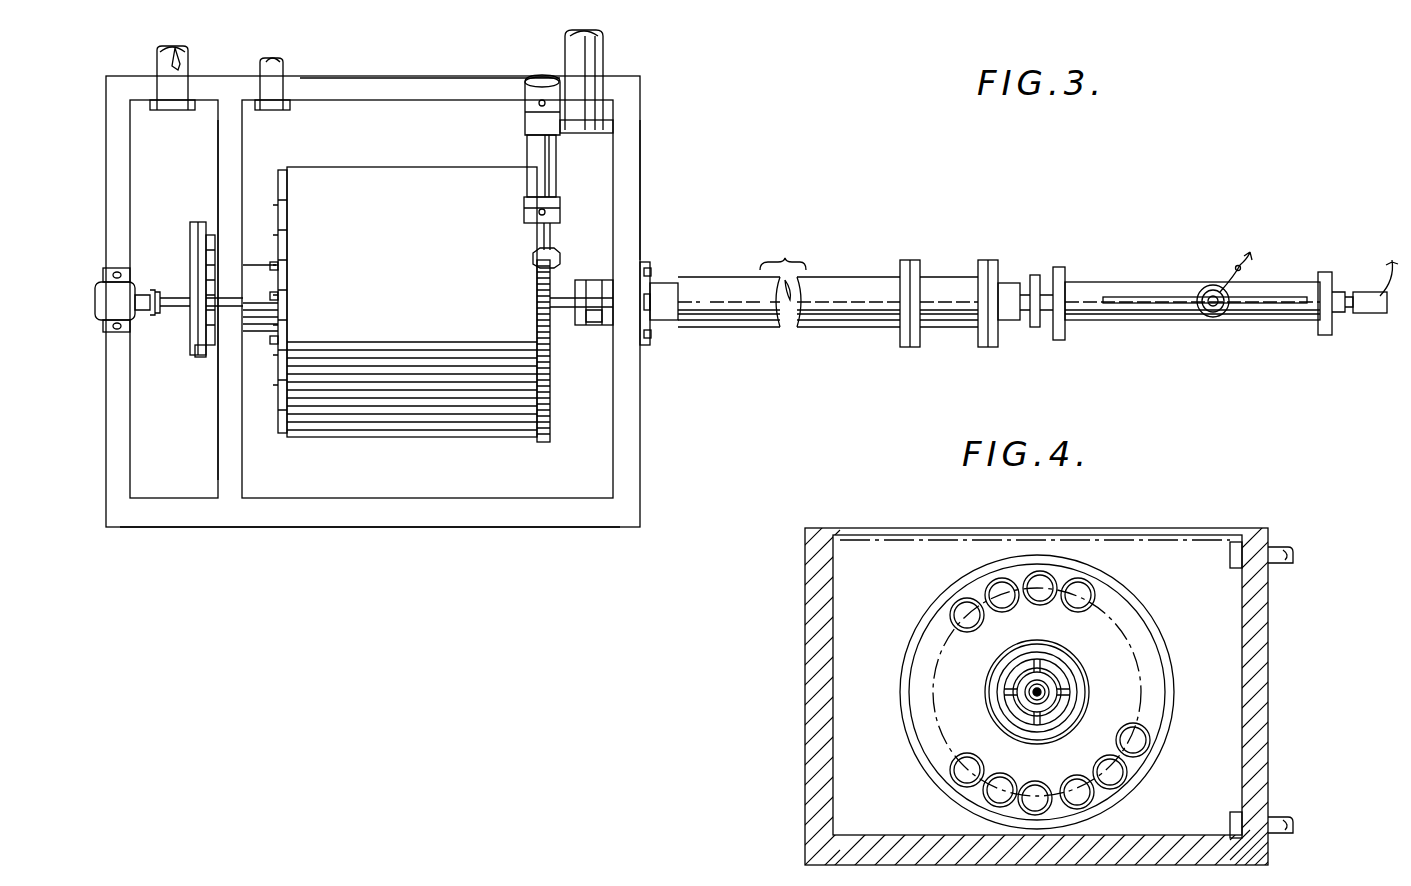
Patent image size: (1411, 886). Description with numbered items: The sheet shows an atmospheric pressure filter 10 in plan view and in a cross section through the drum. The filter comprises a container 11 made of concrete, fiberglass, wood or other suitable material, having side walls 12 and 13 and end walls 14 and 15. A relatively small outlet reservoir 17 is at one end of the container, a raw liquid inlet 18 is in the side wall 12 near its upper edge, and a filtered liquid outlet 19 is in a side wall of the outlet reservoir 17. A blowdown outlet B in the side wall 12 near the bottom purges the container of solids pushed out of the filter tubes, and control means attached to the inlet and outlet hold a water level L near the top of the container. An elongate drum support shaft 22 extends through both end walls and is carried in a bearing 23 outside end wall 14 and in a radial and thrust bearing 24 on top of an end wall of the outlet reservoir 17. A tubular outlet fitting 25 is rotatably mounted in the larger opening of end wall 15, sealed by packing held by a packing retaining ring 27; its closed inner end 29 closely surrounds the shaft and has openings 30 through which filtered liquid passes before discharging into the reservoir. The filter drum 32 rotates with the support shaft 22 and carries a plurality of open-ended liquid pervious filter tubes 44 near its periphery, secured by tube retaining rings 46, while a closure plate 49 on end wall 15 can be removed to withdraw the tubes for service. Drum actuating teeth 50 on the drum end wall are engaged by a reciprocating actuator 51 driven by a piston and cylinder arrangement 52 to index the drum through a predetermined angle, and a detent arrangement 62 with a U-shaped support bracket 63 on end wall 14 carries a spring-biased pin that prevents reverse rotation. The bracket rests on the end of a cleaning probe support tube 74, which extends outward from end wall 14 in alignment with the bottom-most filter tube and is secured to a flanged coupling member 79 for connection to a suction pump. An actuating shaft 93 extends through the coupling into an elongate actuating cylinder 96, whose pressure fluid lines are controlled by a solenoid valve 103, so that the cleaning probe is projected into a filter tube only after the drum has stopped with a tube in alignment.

In FIG. 3, the atmospheric pressure filter 10 is at (710, 135).
In FIG. 4, the atmospheric pressure filter 10 is at (1207, 510).
In FIG. 3, the container 11 is at (640, 418).
In FIG. 4, the container 11 is at (1270, 590).
In FIG. 3, the side wall 12 is at (415, 76).
In FIG. 3, the side wall 13 is at (430, 527).
In FIG. 3, the end wall 14 is at (640, 180).
In FIG. 3, the end wall 15 is at (218, 425).
In FIG. 3, the outlet reservoir 17 is at (178, 58).
In FIG. 3, the raw liquid inlet 18 is at (603, 60).
In FIG. 4, the raw liquid inlet 18 is at (1285, 546).
In FIG. 3, the filtered liquid outlet 19 is at (157, 60).
In FIG. 3, the drum support shaft 22 is at (172, 310).
In FIG. 4, the drum support shaft 22 is at (1045, 688).
In FIG. 3, the bearing 23 is at (665, 290).
In FIG. 3, the radial and thrust bearing 24 is at (108, 290).
In FIG. 4, the tubular outlet fitting 25 is at (1018, 680).
In FIG. 3, the packing retaining ring 27 is at (195, 235).
In FIG. 4, the closed inner end 29 is at (1040, 718).
In FIG. 4, the openings 30 is at (1017, 716).
In FIG. 3, the filter drum 32 is at (372, 167).
In FIG. 4, the filter drum 32 is at (1147, 598).
In FIG. 4, the filter tubes 44 is at (1078, 595).
In FIG. 3, the tube retaining rings 46 is at (282, 252).
In FIG. 3, the closure plate 49 is at (212, 240).
In FIG. 3, the drum actuating teeth 50 is at (543, 442).
In FIG. 3, the reciprocating actuator 51 is at (543, 240).
In FIG. 3, the piston and cylinder arrangement 52 is at (527, 152).
In FIG. 3, the detent arrangement 62 is at (599, 327).
In FIG. 3, the U-shaped support bracket 63 is at (590, 280).
In FIG. 3, the cleaning probe support tube 74 is at (750, 328).
In FIG. 3, the coupling member 79 is at (958, 283).
In FIG. 3, the actuating shaft 93 is at (1046, 290).
In FIG. 3, the actuating cylinder 96 is at (1128, 320).
In FIG. 3, the solenoid valve 103 is at (1220, 312).
In FIG. 3, the blowdown outlet B is at (282, 70).
In FIG. 4, the blowdown outlet B is at (1283, 818).
In FIG. 4, the water level L is at (940, 540).